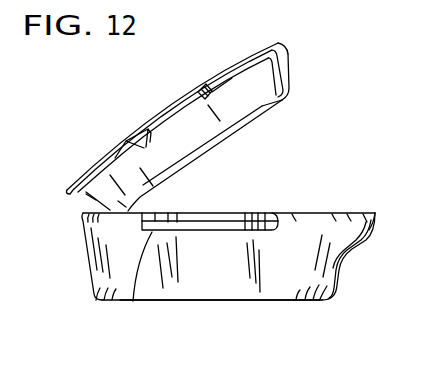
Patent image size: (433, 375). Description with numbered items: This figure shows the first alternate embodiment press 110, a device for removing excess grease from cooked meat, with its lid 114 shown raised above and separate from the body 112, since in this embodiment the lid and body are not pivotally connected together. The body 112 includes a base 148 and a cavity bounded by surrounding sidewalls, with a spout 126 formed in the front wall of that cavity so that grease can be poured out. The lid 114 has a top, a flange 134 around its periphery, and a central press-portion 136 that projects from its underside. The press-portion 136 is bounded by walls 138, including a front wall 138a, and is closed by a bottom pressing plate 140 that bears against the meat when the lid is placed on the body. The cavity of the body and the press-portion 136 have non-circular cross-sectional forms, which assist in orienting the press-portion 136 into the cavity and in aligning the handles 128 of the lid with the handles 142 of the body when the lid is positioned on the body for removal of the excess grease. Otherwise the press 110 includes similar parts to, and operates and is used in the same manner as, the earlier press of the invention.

The first alternate embodiment press 110 is at (125, 105).
The body 112 is at (285, 307).
The lid 114 is at (103, 146).
The spout 126 is at (377, 212).
The handles 128 is at (133, 301).
The flange 134 is at (286, 45).
The central press-portion 136 is at (229, 87).
The walls 138 is at (86, 194).
The front wall 138a is at (289, 78).
The closed bottom pressing plate 140 is at (262, 116).
The handles 142 is at (198, 91).
The base 148 is at (176, 300).